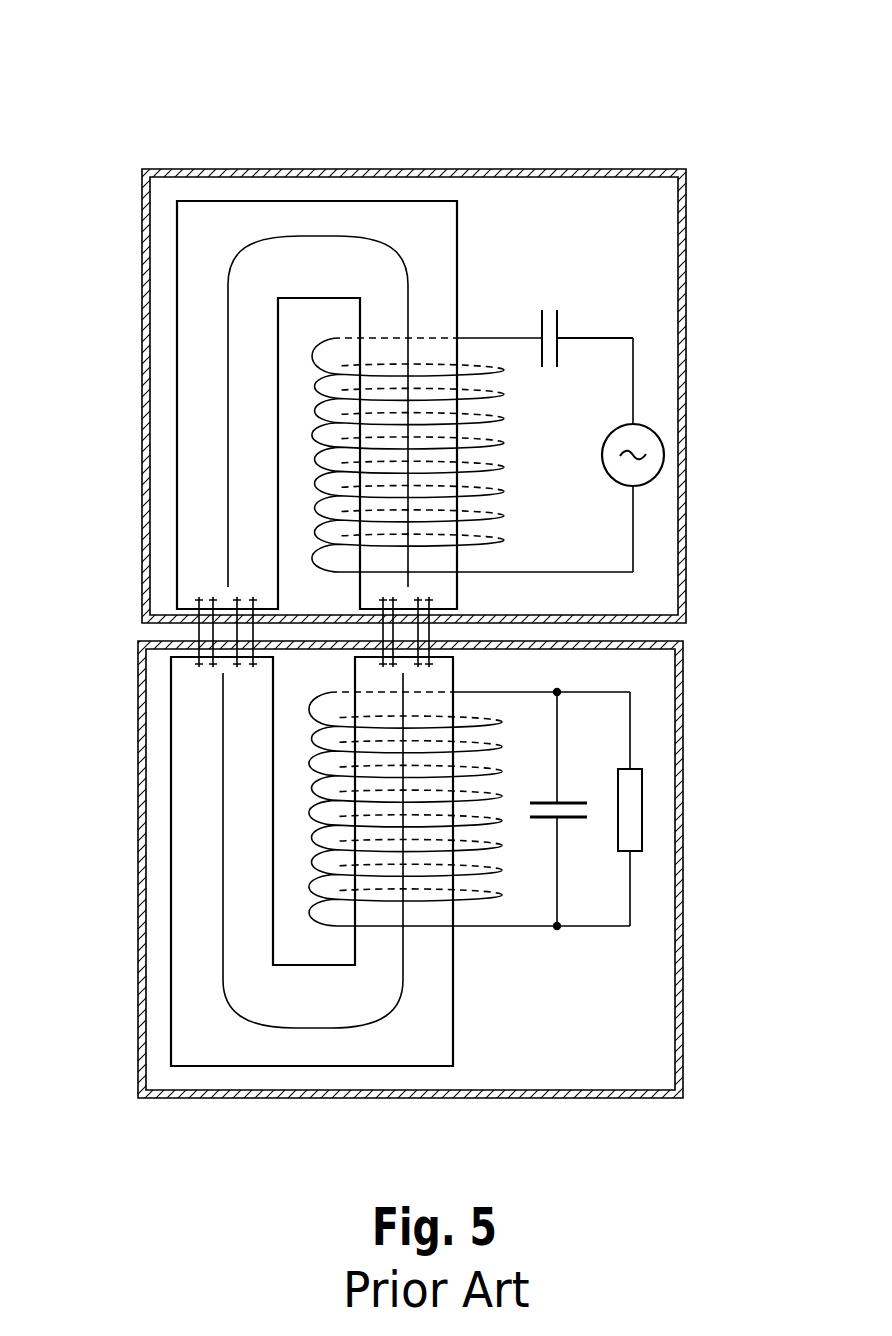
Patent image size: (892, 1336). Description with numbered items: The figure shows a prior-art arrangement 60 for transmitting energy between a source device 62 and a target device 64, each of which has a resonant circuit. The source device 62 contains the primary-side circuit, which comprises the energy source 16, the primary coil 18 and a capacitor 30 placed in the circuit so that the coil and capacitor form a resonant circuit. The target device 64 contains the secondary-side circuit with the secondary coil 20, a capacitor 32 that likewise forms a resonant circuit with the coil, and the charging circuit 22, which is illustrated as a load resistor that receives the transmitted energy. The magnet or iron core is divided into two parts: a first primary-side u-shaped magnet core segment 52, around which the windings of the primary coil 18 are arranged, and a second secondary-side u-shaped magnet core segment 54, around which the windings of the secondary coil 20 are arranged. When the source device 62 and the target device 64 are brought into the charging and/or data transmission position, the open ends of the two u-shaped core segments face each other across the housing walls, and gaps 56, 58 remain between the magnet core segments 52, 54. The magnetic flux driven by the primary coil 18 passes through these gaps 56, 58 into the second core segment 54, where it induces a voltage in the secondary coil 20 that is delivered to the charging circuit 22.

The arrangement 60 is at (582, 78).
The source device 62 is at (680, 275).
The target device 64 is at (679, 683).
The first primary-side u-shaped magnet core segment 52 is at (435, 240).
The second secondary-side u-shaped magnet core segment 54 is at (455, 678).
The primary coil 18 is at (505, 462).
The secondary coil 20 is at (498, 768).
The capacitor 30 is at (558, 352).
The capacitor 32 is at (567, 800).
The energy source 16 is at (650, 463).
The charging circuit 22 is at (630, 810).
The gap 56 is at (192, 632).
The gap 58 is at (440, 632).